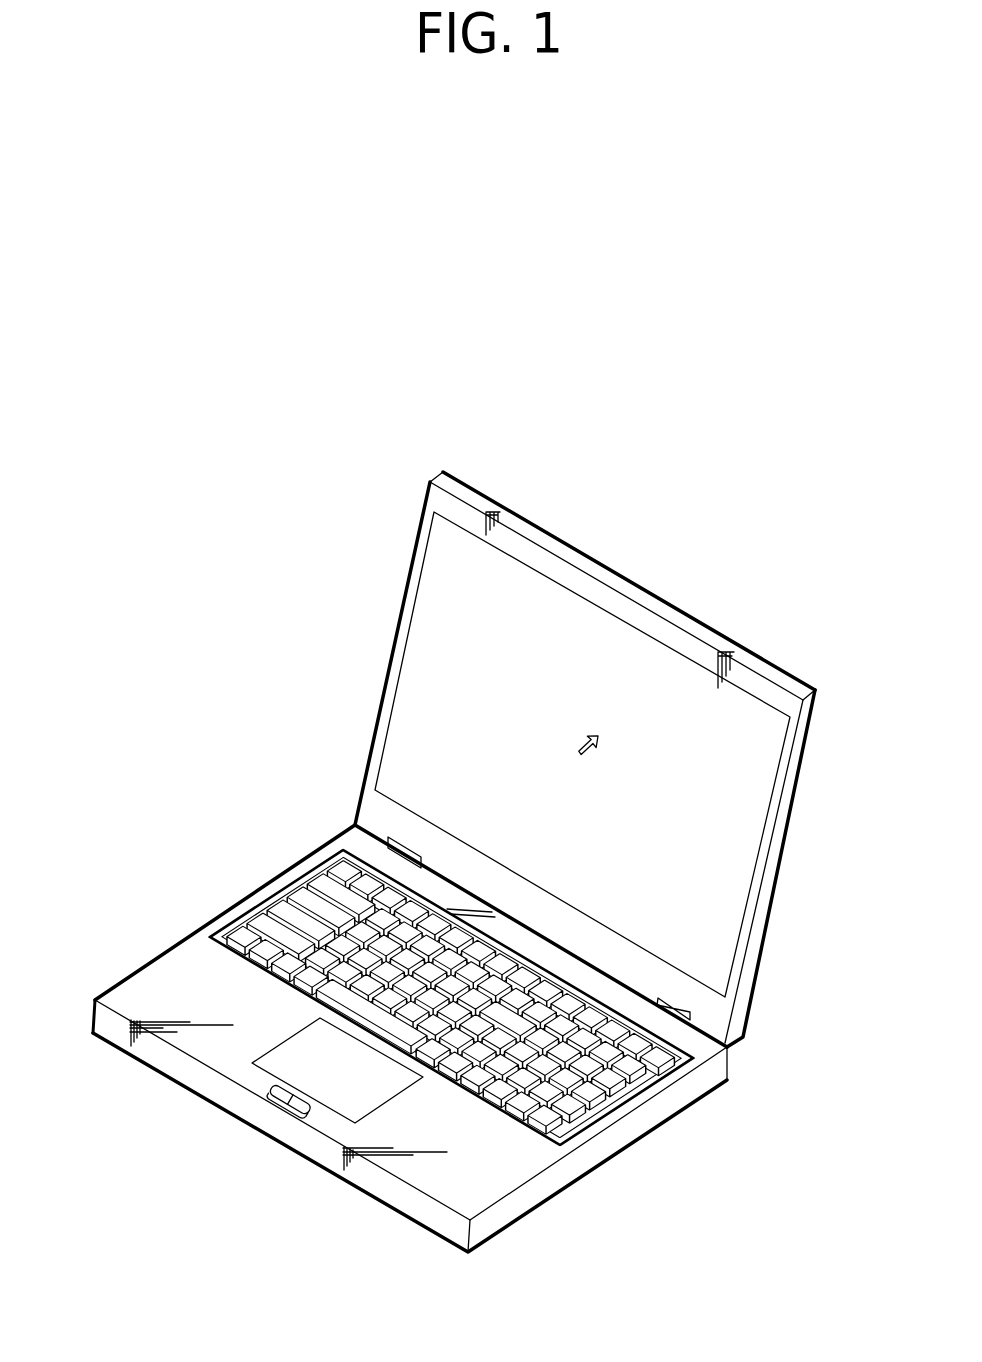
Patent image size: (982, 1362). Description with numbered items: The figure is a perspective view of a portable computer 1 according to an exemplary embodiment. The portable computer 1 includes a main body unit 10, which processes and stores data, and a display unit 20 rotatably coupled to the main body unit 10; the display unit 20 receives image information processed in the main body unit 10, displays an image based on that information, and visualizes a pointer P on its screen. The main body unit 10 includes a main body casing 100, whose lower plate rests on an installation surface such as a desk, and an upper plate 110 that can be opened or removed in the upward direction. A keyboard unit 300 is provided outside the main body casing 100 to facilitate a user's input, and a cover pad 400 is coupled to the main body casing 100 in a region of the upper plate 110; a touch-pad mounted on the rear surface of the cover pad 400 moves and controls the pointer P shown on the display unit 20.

The portable computer 1 is at (108, 627).
The main body unit 10 is at (187, 900).
The display unit 20 is at (358, 617).
The main body casing 100 is at (173, 1063).
The upper plate 110 is at (442, 1180).
The keyboard unit 300 is at (618, 1083).
The cover pad 400 is at (353, 1100).
The pointer P is at (712, 814).